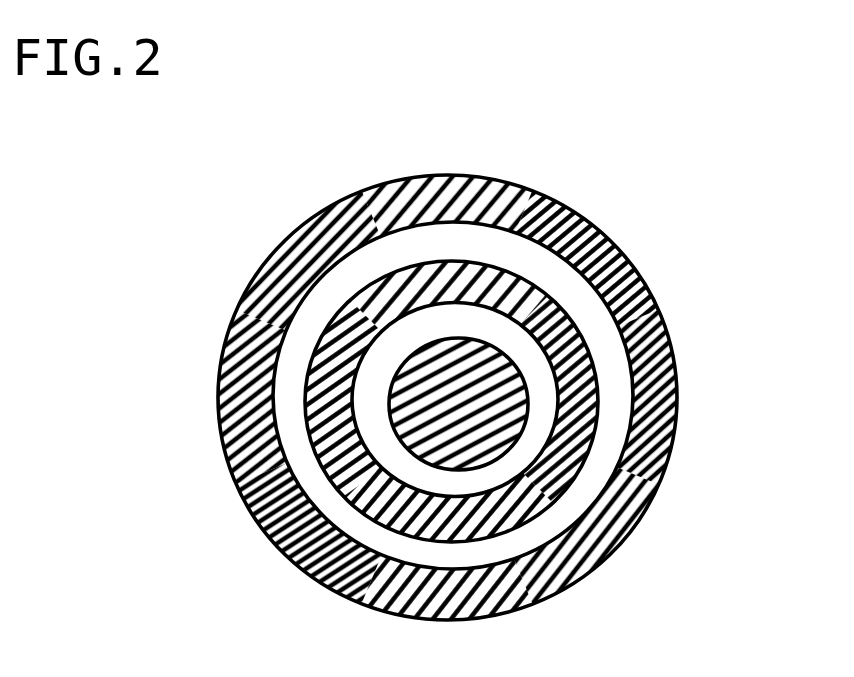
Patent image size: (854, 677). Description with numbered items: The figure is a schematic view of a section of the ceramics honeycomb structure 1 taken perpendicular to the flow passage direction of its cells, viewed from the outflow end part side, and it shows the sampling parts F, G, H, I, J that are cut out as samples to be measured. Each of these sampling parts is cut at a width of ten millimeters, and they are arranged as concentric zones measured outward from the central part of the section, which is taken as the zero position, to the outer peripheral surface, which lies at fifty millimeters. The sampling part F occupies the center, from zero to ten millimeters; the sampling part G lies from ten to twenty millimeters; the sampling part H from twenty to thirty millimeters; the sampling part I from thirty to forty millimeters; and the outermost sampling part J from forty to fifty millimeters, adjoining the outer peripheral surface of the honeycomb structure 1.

The ceramics honeycomb structure 1 is at (585, 193).
The sampling part F is at (423, 360).
The sampling part G is at (542, 382).
The sampling part H is at (318, 425).
The sampling part I is at (613, 443).
The sampling part J is at (323, 562).